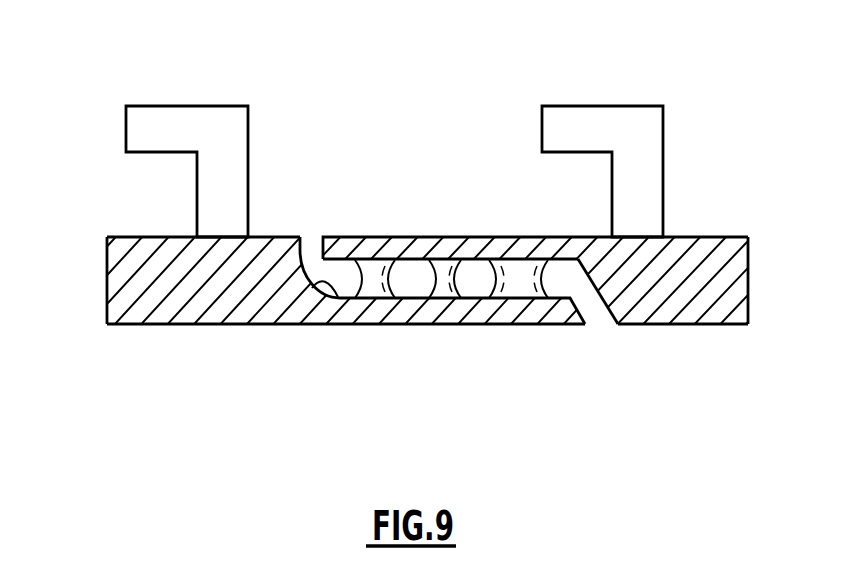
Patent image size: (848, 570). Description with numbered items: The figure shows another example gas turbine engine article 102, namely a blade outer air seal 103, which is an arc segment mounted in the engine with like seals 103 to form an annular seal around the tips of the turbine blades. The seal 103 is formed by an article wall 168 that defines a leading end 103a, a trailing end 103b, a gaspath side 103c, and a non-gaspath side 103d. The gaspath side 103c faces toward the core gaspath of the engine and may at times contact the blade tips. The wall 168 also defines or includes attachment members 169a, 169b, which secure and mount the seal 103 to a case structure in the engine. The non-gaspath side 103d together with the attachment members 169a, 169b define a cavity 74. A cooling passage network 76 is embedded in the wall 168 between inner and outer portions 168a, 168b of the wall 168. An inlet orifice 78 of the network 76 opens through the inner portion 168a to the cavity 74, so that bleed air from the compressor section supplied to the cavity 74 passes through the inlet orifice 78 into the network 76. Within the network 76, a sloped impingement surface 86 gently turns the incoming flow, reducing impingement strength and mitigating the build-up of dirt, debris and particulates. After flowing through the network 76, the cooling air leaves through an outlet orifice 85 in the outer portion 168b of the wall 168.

The cavity 74 is at (450, 140).
The cooling passage network 76 is at (475, 280).
The inlet orifice 78 is at (300, 250).
The outlet orifice 85 is at (578, 309).
The sloped impingement surface 86 is at (340, 298).
The gas turbine engine article 102 is at (90, 355).
The blade outer air seal 103 is at (426, 283).
The leading end 103a is at (107, 270).
The trailing end 103b is at (748, 281).
The gaspath side 103c is at (203, 326).
The non-gaspath side 103d is at (267, 237).
The article wall 168 is at (175, 298).
The inner portion 168a is at (422, 237).
The outer portion 168b is at (452, 325).
The attachment member 169a is at (248, 130).
The attachment member 169b is at (663, 130).